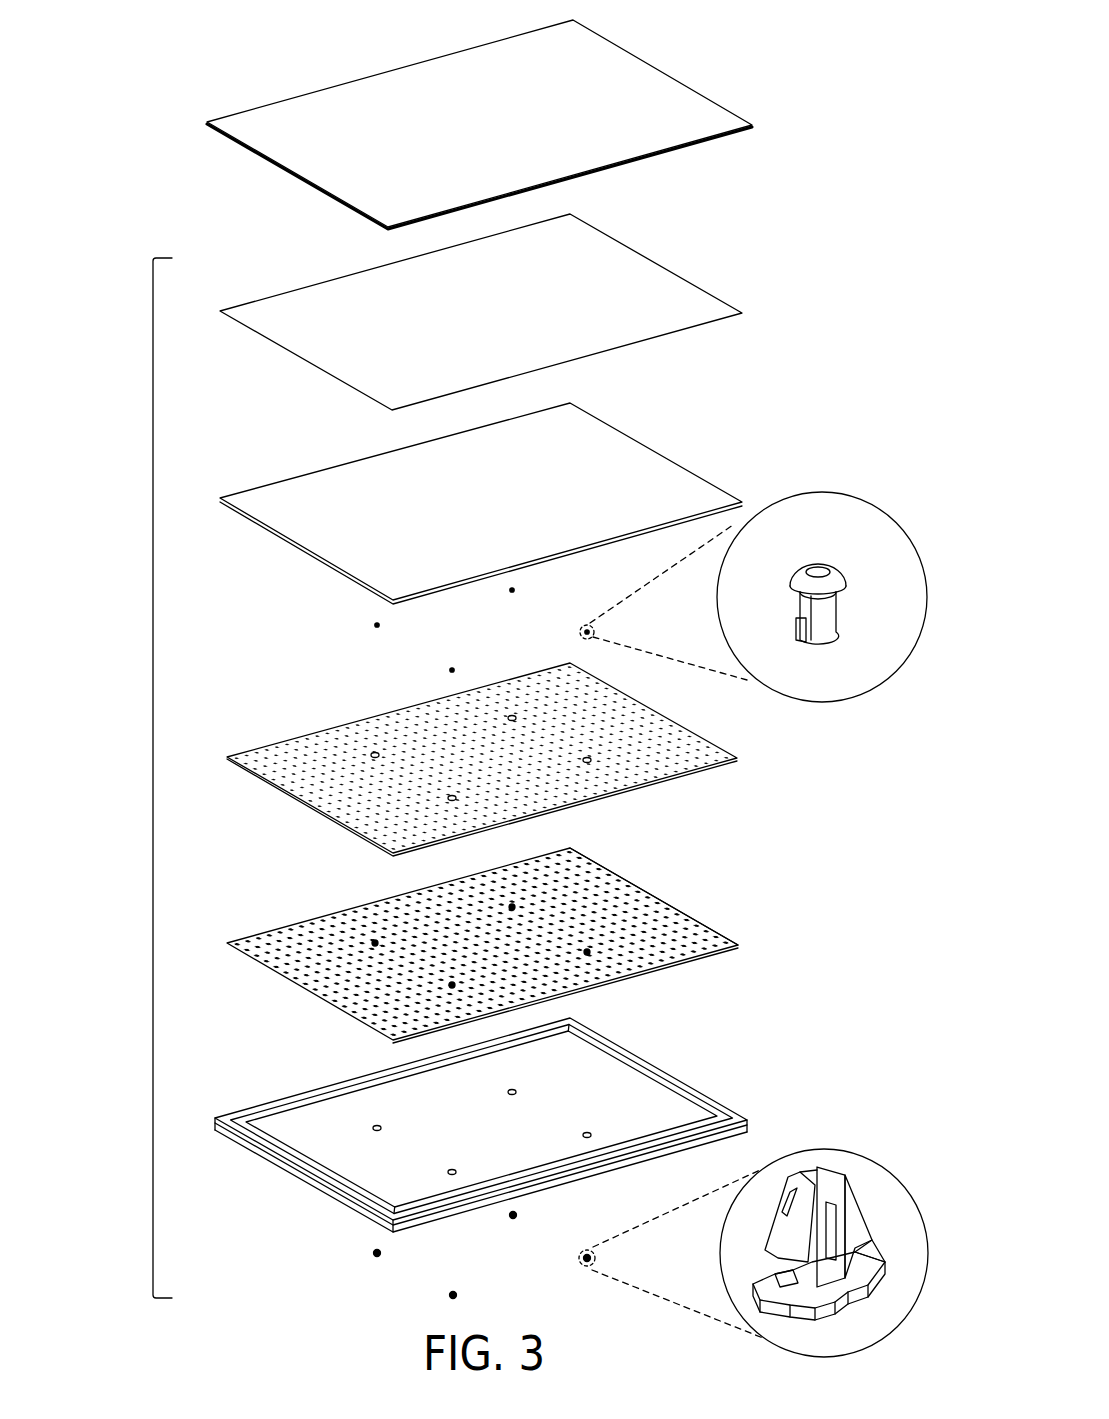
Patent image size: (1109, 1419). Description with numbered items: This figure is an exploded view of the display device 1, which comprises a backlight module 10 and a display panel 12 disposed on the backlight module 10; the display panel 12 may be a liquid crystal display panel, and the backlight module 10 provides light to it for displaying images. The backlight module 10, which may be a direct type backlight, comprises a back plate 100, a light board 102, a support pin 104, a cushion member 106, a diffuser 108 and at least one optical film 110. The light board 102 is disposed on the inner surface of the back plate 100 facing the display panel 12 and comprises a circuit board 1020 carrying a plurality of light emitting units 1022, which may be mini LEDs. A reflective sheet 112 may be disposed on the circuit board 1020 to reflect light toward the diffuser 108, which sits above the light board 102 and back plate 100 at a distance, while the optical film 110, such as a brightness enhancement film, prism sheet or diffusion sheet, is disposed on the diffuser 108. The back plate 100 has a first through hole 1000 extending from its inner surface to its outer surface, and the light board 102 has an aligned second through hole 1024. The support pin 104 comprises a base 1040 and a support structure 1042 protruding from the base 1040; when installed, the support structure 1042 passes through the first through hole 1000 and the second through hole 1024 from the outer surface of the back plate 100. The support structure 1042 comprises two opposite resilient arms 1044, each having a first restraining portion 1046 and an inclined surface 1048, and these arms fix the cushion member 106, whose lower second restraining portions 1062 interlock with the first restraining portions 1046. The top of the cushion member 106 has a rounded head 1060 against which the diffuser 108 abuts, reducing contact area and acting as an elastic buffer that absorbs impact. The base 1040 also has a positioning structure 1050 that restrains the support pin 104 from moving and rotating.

The display device 1 is at (163, 70).
The backlight module 10 is at (153, 792).
The display panel 12 is at (683, 84).
The optical film 110 is at (694, 287).
The diffuser 108 is at (678, 462).
The cushion member 106 is at (582, 630).
The rounded head 1060 is at (833, 570).
The second restraining portion 1062 is at (800, 628).
The reflective sheet 112 is at (703, 741).
The light board 102 is at (668, 896).
The circuit board 1020 is at (712, 958).
The light emitting unit 1022 is at (715, 946).
The second through hole 1024 is at (585, 950).
The back plate 100 is at (593, 1030).
The first through hole 1000 is at (592, 1130).
The support pin 104 is at (580, 1258).
The base 1040 is at (803, 1320).
The support structure 1042 is at (910, 1110).
The resilient arm 1044 is at (807, 1180).
The first restraining portion 1046 is at (833, 1194).
The inclined surface 1048 is at (875, 1250).
The positioning structure 1050 is at (857, 1317).